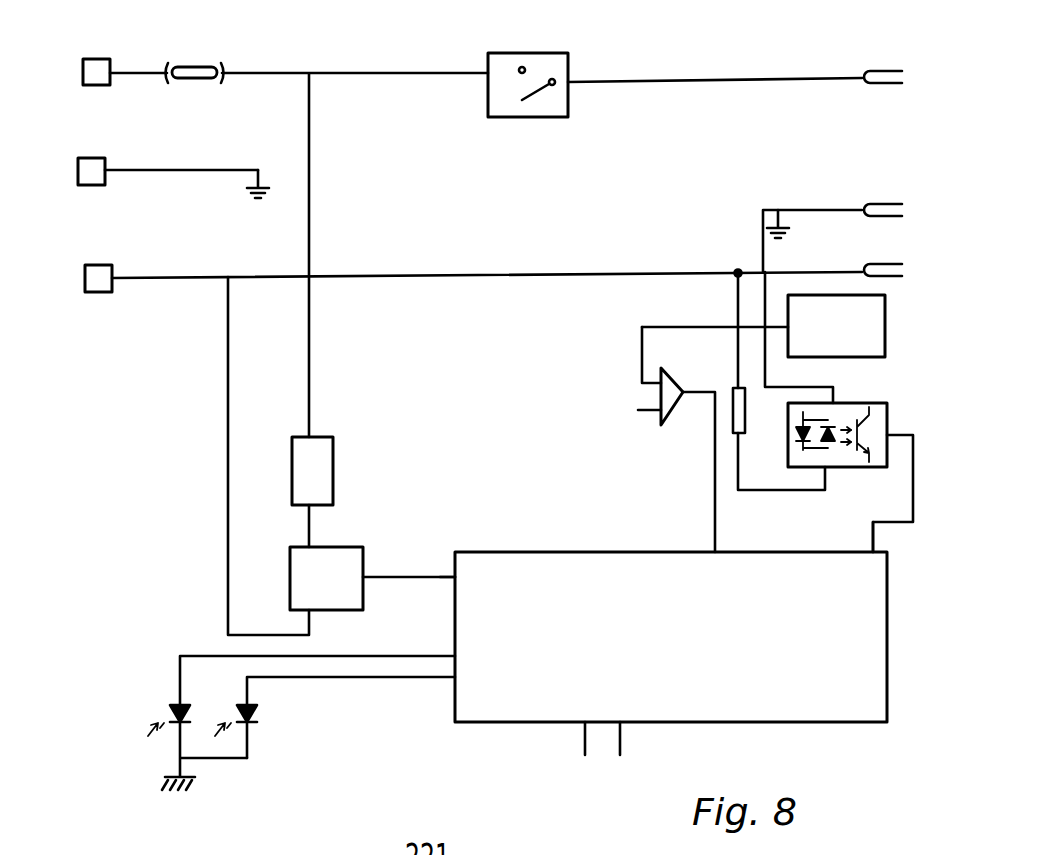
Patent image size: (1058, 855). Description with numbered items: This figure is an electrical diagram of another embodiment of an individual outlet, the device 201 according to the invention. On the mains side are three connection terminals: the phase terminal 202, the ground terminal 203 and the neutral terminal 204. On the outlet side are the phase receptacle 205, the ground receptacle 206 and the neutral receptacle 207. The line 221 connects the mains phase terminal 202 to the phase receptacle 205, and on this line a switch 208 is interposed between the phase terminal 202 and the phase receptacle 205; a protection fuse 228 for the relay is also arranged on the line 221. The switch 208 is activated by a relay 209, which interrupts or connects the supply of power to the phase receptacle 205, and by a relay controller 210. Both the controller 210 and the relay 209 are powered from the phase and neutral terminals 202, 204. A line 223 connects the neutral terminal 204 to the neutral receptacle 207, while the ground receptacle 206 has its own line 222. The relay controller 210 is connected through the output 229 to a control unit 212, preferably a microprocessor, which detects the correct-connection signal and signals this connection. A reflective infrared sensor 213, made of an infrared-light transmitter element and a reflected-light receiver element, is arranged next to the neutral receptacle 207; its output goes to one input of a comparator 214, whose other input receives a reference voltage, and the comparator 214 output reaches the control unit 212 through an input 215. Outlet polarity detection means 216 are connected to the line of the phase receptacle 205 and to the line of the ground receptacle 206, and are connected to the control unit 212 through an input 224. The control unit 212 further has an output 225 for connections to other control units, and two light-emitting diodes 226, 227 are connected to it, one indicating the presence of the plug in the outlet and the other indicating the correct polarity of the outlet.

The device 201 is at (208, 44).
The phase mains connection terminal 202 is at (103, 78).
The ground mains connection terminal 203 is at (98, 176).
The neutral mains connection terminal 204 is at (105, 288).
The phase receptacle 205 is at (873, 86).
The ground receptacle 206 is at (878, 213).
The neutral receptacle 207 is at (878, 268).
The switch 208 is at (504, 108).
The relay 209 is at (322, 477).
The relay controller 210 is at (353, 568).
The control unit 212 is at (860, 695).
The reflective infrared sensor 213 is at (873, 338).
The comparator 214 is at (680, 412).
The input 215 is at (710, 493).
The outlet polarity detection means 216 is at (880, 420).
The line 221 is at (660, 75).
The line 222 is at (807, 210).
The line 223 is at (485, 270).
The input 224 is at (848, 560).
The output 225 is at (592, 717).
The light-emitting diode 226 is at (260, 712).
The light-emitting diode 227 is at (175, 702).
The protection fuse 228 is at (203, 78).
The output 229 is at (474, 584).